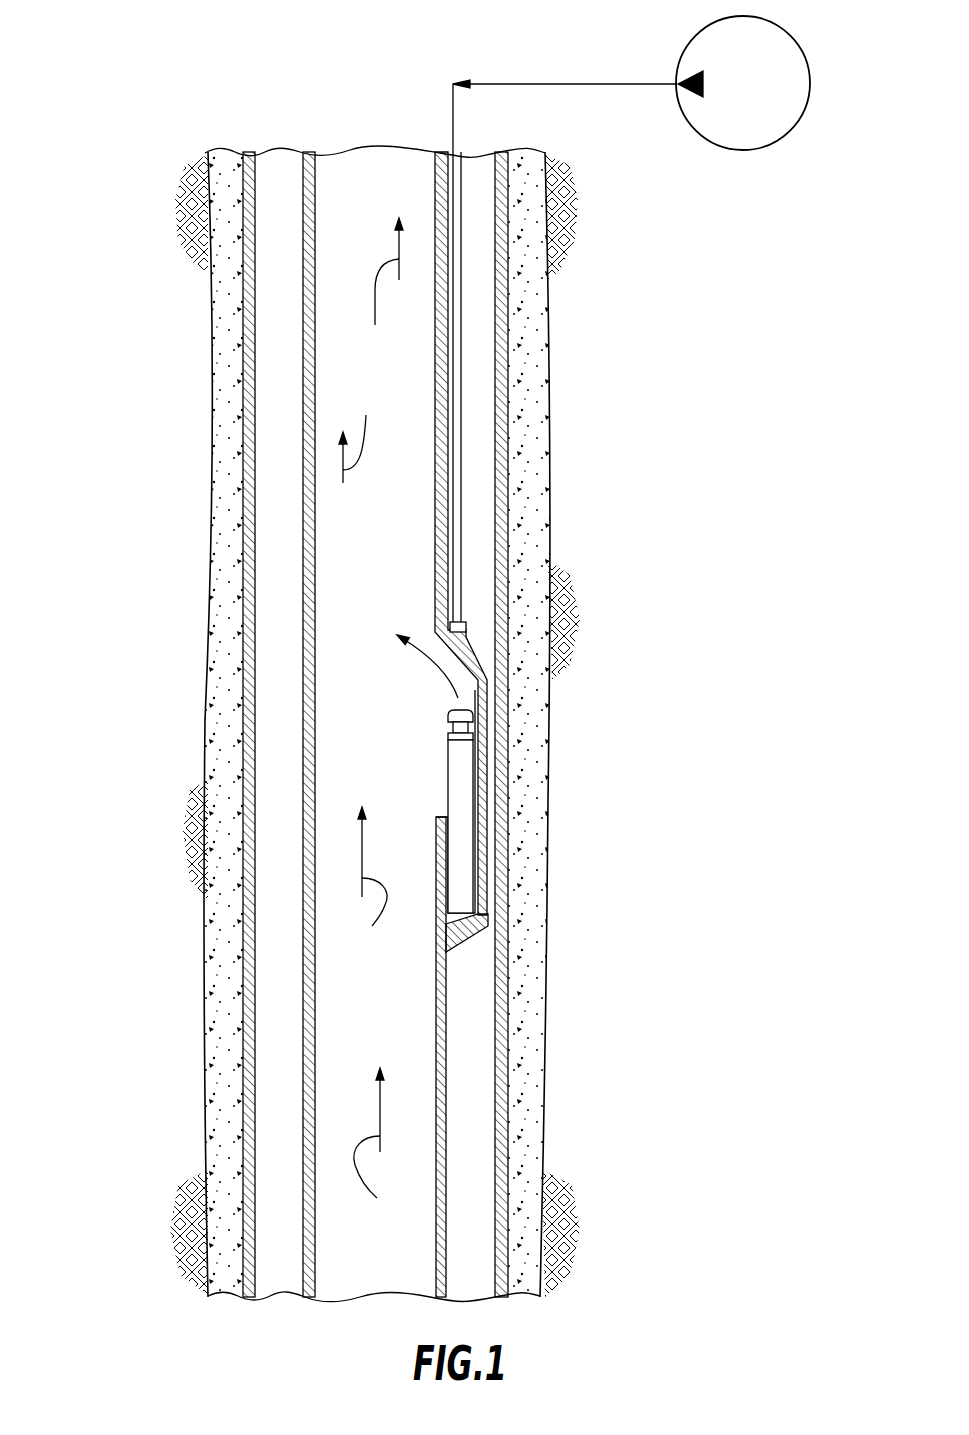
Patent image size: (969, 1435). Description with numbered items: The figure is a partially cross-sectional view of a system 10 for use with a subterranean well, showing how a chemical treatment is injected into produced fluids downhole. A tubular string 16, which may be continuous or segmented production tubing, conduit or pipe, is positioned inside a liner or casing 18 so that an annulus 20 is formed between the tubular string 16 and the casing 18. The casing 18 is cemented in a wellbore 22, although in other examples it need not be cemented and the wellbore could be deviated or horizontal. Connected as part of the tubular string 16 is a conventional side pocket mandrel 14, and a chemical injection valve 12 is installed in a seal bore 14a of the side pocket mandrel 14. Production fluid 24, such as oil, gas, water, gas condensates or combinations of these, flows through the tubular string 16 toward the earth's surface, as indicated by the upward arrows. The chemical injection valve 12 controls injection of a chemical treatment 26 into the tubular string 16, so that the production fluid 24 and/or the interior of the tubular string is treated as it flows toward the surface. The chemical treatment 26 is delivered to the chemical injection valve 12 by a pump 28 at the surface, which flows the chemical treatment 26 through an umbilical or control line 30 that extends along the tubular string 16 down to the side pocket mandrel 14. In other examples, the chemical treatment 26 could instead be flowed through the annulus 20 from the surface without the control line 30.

The system 10 is at (548, 724).
The chemical injection valve 12 is at (475, 760).
The side pocket mandrel 14 is at (463, 937).
The seal bore 14a is at (447, 858).
The tubular string 16 is at (300, 403).
The casing 18 is at (240, 1023).
The annulus 20 is at (478, 530).
The wellbore 22 is at (536, 1066).
The production fluid 24 is at (383, 807).
The chemical treatment 26 is at (508, 83).
The pump 28 is at (750, 150).
The control line 30 is at (462, 292).